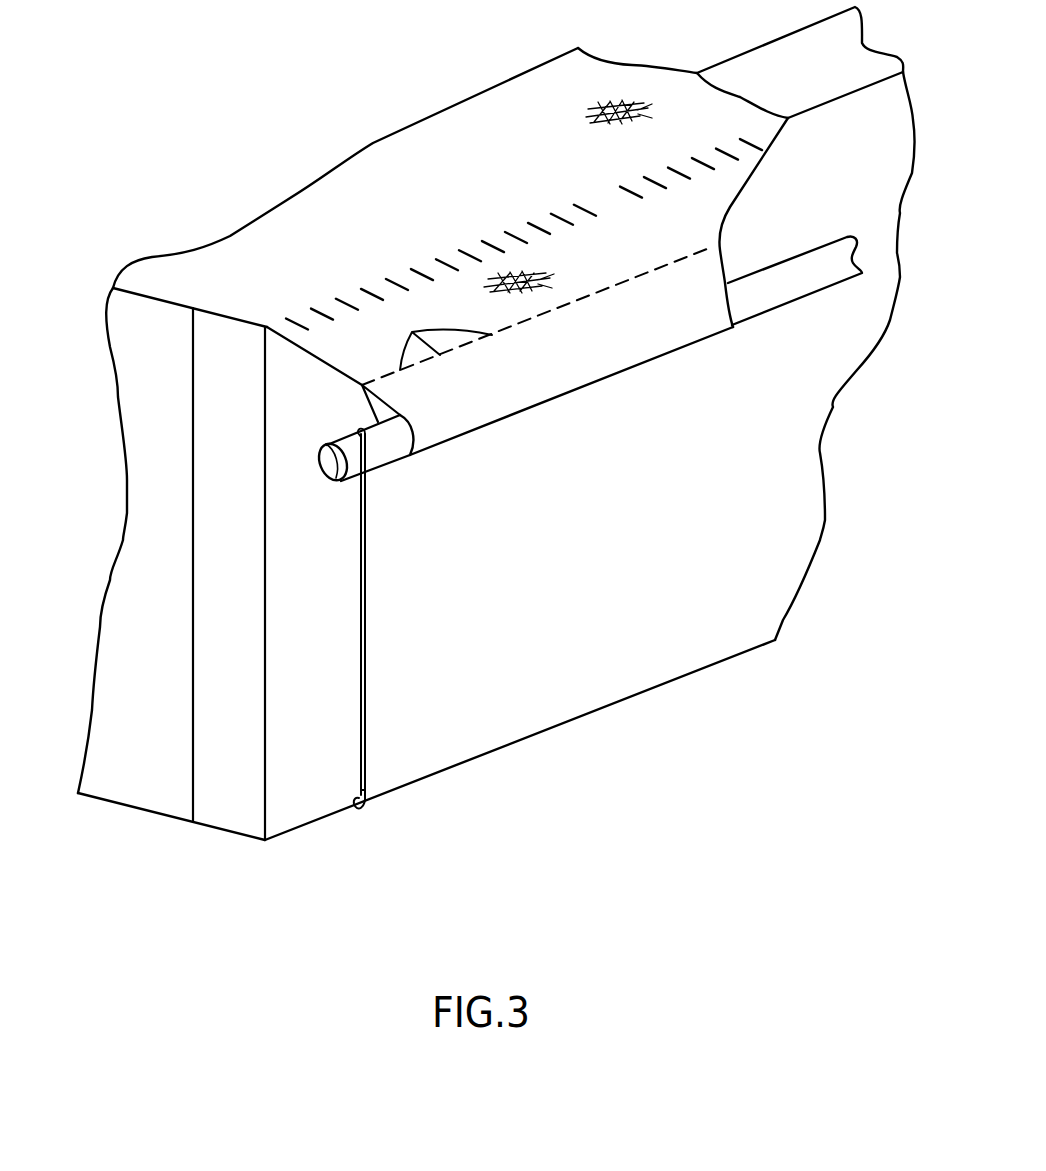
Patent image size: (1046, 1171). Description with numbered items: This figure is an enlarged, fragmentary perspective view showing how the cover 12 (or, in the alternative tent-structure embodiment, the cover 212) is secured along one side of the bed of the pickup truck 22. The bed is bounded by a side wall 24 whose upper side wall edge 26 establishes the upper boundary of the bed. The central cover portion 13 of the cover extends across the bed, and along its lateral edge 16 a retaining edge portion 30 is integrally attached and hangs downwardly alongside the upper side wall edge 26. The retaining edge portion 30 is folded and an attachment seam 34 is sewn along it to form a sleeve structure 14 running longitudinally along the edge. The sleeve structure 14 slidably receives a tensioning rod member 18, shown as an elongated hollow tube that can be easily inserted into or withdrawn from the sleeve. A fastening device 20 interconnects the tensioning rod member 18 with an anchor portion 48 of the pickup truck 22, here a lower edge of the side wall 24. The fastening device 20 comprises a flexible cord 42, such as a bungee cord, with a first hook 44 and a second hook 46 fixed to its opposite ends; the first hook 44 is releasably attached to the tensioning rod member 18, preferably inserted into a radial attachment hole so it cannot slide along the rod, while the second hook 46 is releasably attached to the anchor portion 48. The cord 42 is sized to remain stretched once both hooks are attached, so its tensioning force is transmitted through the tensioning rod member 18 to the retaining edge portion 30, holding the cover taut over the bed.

The cover 12 is at (418, 163).
The cover 212 is at (412, 221).
The central cover portion 13 is at (290, 218).
The sleeve structure 14 is at (607, 362).
The lateral edge 16 is at (620, 186).
The tensioning rod member 18 is at (383, 443).
The fastening device 20 is at (369, 619).
The pickup truck 22 is at (864, 506).
The side wall 24 is at (520, 712).
The upper side wall edge 26 is at (277, 337).
The retaining edge portion 30 is at (613, 257).
The attachment seam 34 is at (430, 341).
The flexible cord 42 is at (368, 727).
The first hook 44 is at (347, 481).
The second hook 46 is at (360, 790).
The anchor portion 48 is at (518, 718).